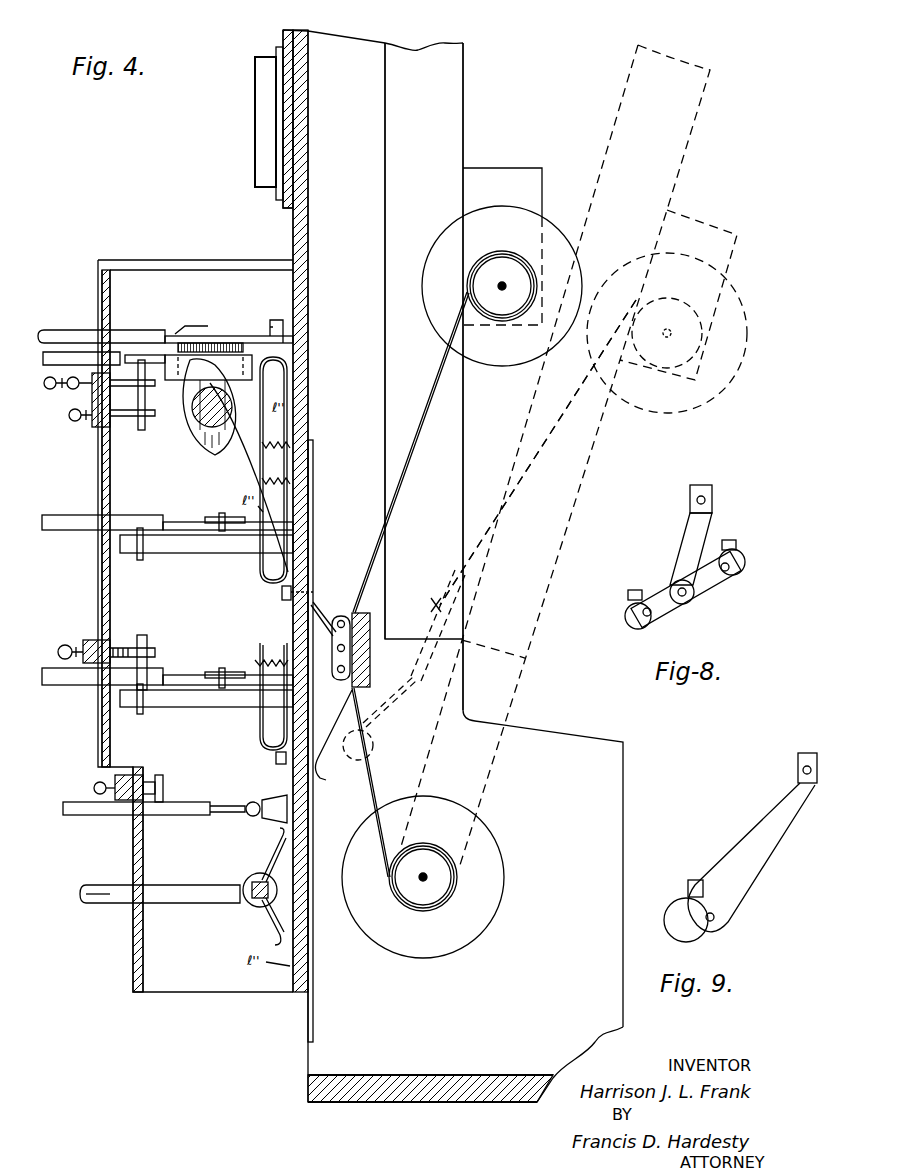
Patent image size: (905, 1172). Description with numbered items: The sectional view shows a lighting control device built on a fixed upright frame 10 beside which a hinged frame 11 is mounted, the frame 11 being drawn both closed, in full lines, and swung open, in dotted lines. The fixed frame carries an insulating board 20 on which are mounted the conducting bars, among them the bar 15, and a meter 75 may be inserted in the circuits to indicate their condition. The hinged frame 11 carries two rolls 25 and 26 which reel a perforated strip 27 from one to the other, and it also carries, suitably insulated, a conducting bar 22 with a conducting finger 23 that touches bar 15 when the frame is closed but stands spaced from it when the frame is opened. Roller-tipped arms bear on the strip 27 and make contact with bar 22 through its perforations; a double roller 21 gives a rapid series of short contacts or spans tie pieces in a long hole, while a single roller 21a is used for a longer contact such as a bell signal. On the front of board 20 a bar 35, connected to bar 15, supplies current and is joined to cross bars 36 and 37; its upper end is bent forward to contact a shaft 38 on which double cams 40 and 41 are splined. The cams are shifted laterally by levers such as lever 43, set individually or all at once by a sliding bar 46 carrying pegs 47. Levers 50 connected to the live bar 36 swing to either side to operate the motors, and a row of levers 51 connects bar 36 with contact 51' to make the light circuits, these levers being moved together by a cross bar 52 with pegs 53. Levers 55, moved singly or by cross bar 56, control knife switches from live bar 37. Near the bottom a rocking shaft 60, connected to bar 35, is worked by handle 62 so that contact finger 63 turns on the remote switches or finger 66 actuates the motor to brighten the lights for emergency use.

In FIG. 4, the fixed upright frame 10 is at (453, 566).
In FIG. 4, the hinged frame 11 is at (461, 376).
In FIG. 4, the bar 15 is at (318, 1020).
In FIG. 4, the insulating board 20 is at (303, 410).
In FIG. 4, the double roller contact 21 is at (324, 620).
In FIG. 8, the double roller contact 21 is at (703, 578).
In FIG. 9, the single roller contact 21a is at (731, 873).
In FIG. 4, the conducting bar 22 is at (437, 598).
In FIG. 4, the conducting finger 23 is at (321, 736).
In FIG. 4, the roll 25 is at (584, 309).
In FIG. 4, the roll 26 is at (423, 877).
In FIG. 4, the perforated strip 27 is at (411, 440).
In FIG. 4, the bar 35 is at (250, 470).
In FIG. 4, the cross bar 36 is at (280, 592).
In FIG. 4, the cross bar 37 is at (275, 762).
In FIG. 4, the shaft 38 is at (200, 420).
In FIG. 4, the double cam 40 is at (214, 456).
In FIG. 4, the double cam 41 is at (177, 428).
In FIG. 4, the lever 43 is at (136, 330).
In FIG. 4, the sliding bar 46 is at (115, 425).
In FIG. 4, the pegs 47 is at (70, 392).
In FIG. 4, the levers 50 is at (66, 513).
In FIG. 4, the levers 51 is at (167, 683).
In FIG. 4, the contact 51' is at (262, 685).
In FIG. 4, the cross bar 52 is at (94, 640).
In FIG. 4, the pegs 53 is at (62, 645).
In FIG. 4, the levers 55 is at (63, 803).
In FIG. 4, the cross bar 56 is at (125, 795).
In FIG. 4, the rocking shaft 60 is at (252, 882).
In FIG. 4, the handle 62 is at (100, 885).
In FIG. 4, the contact finger 63 is at (278, 838).
In FIG. 4, the finger 66 is at (268, 918).
In FIG. 4, the meters 75 is at (258, 142).